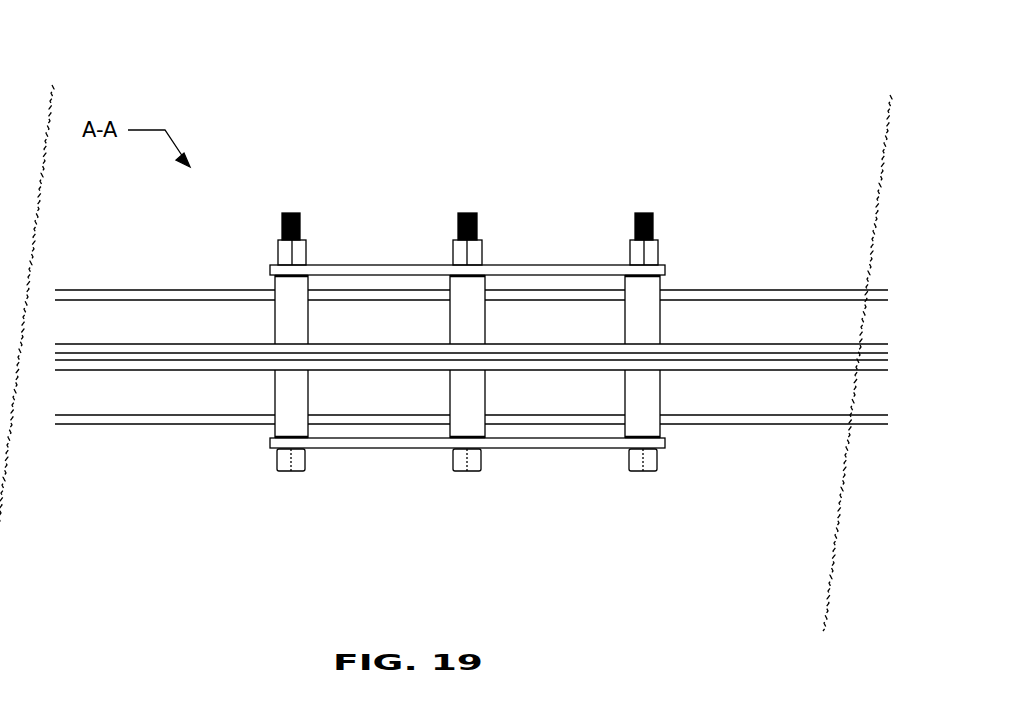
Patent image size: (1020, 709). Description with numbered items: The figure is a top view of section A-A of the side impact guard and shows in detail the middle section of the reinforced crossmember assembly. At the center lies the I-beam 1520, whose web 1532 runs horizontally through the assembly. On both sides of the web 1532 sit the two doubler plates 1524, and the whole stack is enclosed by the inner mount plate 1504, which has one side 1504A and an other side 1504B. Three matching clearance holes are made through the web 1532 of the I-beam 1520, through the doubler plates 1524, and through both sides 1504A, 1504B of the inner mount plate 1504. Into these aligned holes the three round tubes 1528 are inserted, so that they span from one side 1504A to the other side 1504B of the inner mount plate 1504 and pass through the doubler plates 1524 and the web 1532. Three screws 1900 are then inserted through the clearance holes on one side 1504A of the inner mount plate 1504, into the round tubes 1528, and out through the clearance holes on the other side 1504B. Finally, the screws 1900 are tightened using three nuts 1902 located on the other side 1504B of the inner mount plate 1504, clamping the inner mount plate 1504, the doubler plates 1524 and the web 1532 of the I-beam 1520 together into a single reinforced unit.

The inner mount plate 1504 is at (467, 372).
The one side of the inner mount plate 1504A is at (348, 450).
The other side of the inner mount plate 1504B is at (386, 265).
The I-beam 1520 is at (764, 299).
The doubler plates 1524 is at (230, 344).
The round tubes 1528 is at (274, 320).
The web 1532 is at (152, 357).
The screws 1900 is at (288, 472).
The nuts 1902 is at (283, 214).